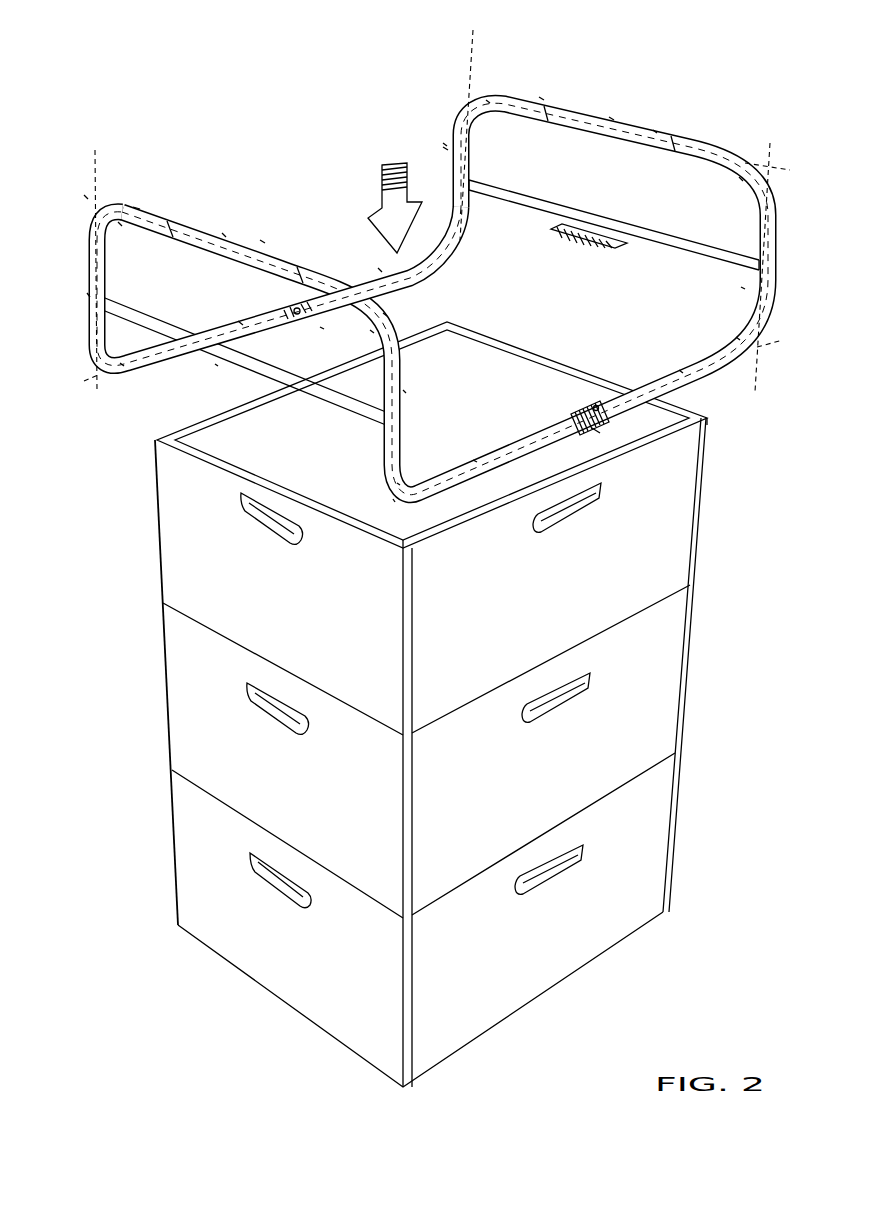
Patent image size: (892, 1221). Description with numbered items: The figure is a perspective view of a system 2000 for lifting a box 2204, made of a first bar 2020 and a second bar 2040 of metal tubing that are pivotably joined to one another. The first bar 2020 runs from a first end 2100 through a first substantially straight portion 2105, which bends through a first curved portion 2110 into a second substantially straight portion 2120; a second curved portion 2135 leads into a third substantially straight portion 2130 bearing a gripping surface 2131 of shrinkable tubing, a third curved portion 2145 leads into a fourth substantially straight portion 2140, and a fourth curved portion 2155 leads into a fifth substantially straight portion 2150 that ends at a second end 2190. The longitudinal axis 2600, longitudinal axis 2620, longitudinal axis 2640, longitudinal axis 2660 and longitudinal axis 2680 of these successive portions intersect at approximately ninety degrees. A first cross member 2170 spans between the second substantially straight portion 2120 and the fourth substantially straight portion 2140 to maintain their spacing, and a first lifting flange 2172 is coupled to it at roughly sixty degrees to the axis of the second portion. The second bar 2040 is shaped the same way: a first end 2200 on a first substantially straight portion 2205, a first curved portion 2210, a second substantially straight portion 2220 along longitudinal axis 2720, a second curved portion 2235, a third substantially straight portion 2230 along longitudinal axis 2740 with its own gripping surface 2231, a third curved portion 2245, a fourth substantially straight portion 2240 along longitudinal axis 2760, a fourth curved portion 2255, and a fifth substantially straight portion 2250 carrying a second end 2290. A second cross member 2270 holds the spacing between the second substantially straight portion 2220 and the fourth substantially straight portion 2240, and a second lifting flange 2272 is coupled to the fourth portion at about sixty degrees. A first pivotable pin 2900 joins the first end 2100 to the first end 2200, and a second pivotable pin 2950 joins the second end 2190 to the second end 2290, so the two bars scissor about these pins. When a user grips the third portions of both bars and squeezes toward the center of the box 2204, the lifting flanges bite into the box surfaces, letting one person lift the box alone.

The system 2000 is at (245, 60).
The first bar 2020 is at (653, 130).
The second bar 2040 is at (260, 240).
The first end 2100 is at (383, 313).
The first substantially straight portion 2105 is at (380, 268).
The first curved portion 2110 is at (444, 147).
The second substantially straight portion 2120 is at (444, 143).
The third substantially straight portion 2130 is at (539, 97).
The gripping surface 2131 is at (609, 117).
The second curved portion 2135 is at (486, 100).
The fourth substantially straight portion 2140 is at (741, 287).
The third curved portion 2145 is at (739, 177).
The fifth substantially straight portion 2150 is at (679, 370).
The fourth curved portion 2155 is at (736, 337).
The first cross member 2170 is at (539, 200).
The first lifting flange 2172 is at (573, 240).
The second end 2190 is at (596, 405).
The first end 2200 is at (320, 327).
The box 2204 is at (263, 589).
The first substantially straight portion 2205 is at (240, 323).
The first curved portion 2210 is at (120, 363).
The second substantially straight portion 2220 is at (87, 293).
The third substantially straight portion 2230 is at (133, 207).
The gripping surface 2231 is at (222, 233).
The second curved portion 2235 is at (120, 223).
The fourth substantially straight portion 2240 is at (403, 390).
The third curved portion 2245 is at (370, 330).
The fifth substantially straight portion 2250 is at (473, 460).
The fourth curved portion 2255 is at (397, 483).
The second cross member 2270 is at (235, 357).
The second lifting flange 2272 is at (217, 364).
The second end 2290 is at (577, 416).
The longitudinal axis 2600 is at (70, 385).
The longitudinal axis 2620 is at (476, 123).
The longitudinal axis 2640 is at (791, 174).
The longitudinal axis 2660 is at (772, 253).
The longitudinal axis 2680 is at (793, 340).
The longitudinal axis 2720 is at (110, 257).
The longitudinal axis 2740 is at (86, 196).
The longitudinal axis 2760 is at (395, 502).
The first pivotable pin 2900 is at (298, 304).
The second pivotable pin 2950 is at (596, 430).